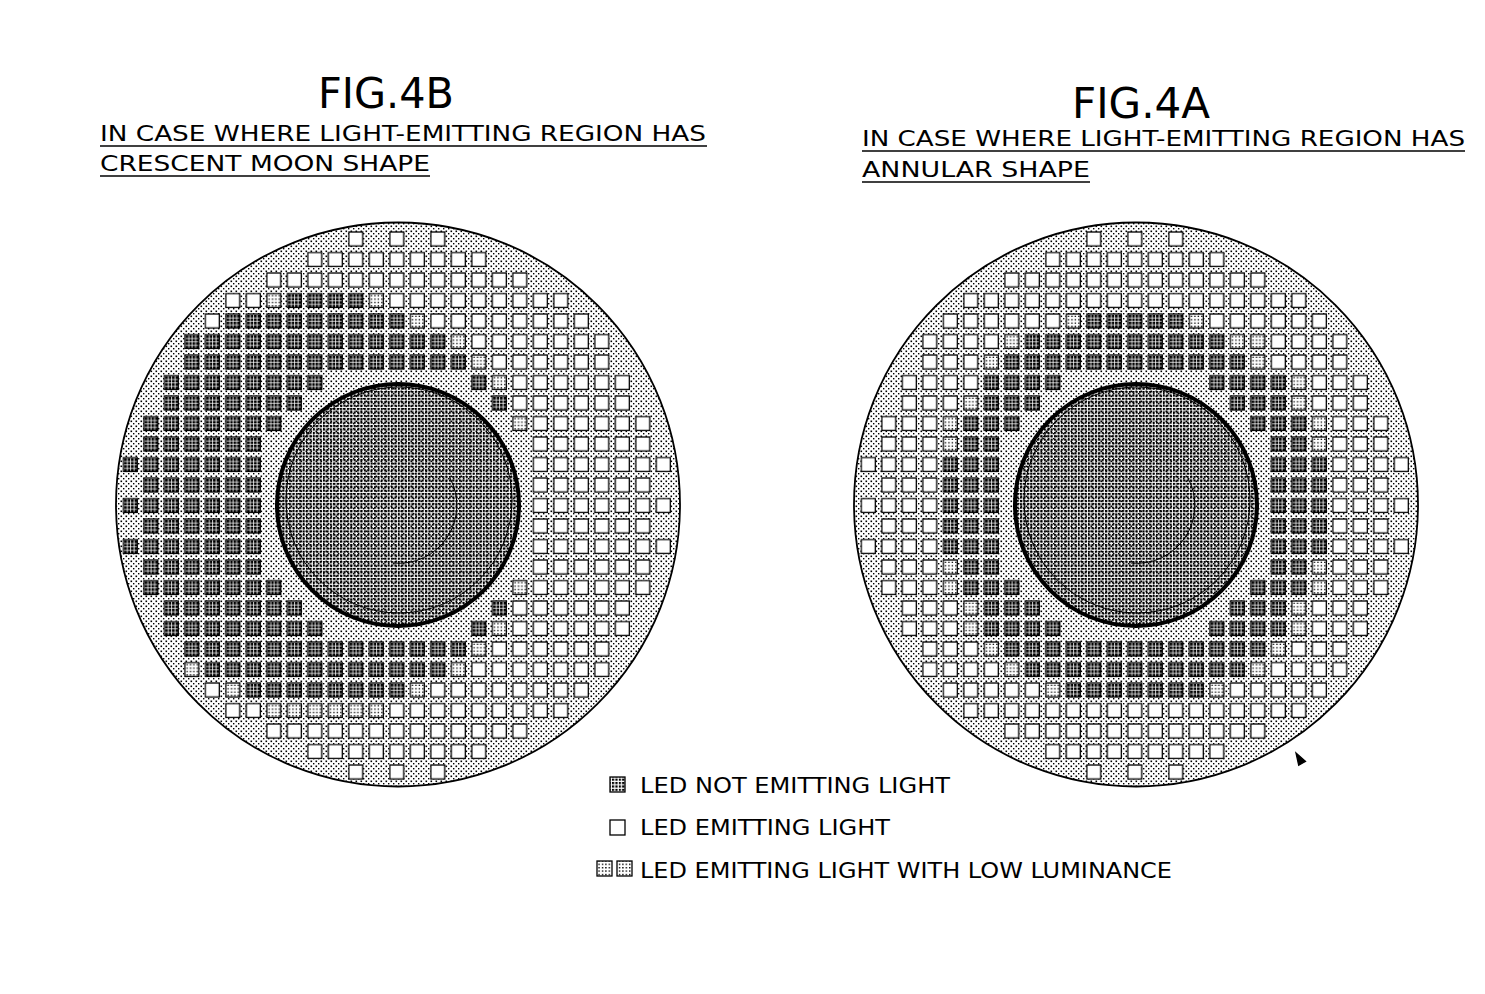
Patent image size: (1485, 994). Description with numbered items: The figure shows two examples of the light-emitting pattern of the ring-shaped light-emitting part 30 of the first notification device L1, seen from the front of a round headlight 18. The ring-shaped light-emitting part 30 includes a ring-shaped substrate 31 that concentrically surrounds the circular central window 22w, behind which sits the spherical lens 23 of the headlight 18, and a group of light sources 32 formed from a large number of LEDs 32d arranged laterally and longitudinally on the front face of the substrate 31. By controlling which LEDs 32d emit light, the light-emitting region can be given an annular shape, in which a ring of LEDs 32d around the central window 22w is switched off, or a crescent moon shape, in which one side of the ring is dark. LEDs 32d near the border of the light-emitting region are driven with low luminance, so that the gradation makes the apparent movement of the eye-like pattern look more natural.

In FIG. 4B, the ring-shaped light-emitting part 30 is at (390, 516).
In FIG. 4A, the ring-shaped light-emitting part 30 is at (1105, 516).
In FIG. 4B, the ring-shaped substrate 31 is at (292, 747).
In FIG. 4A, the ring-shaped substrate 31 is at (1031, 746).
In FIG. 4B, the group of light sources 32 is at (398, 505).
In FIG. 4A, the group of light sources 32 is at (1136, 505).
In FIG. 4B, the LED 32d is at (582, 338).
In FIG. 4A, the LED 32d is at (1320, 338).
In FIG. 4A, the central window 22w is at (1136, 505).
In FIG. 4A, the spherical lens 23 is at (1024, 541).
In FIG. 4A, the round headlight 18 is at (1024, 541).
In FIG. 4A, the first notification device L1 is at (1300, 760).